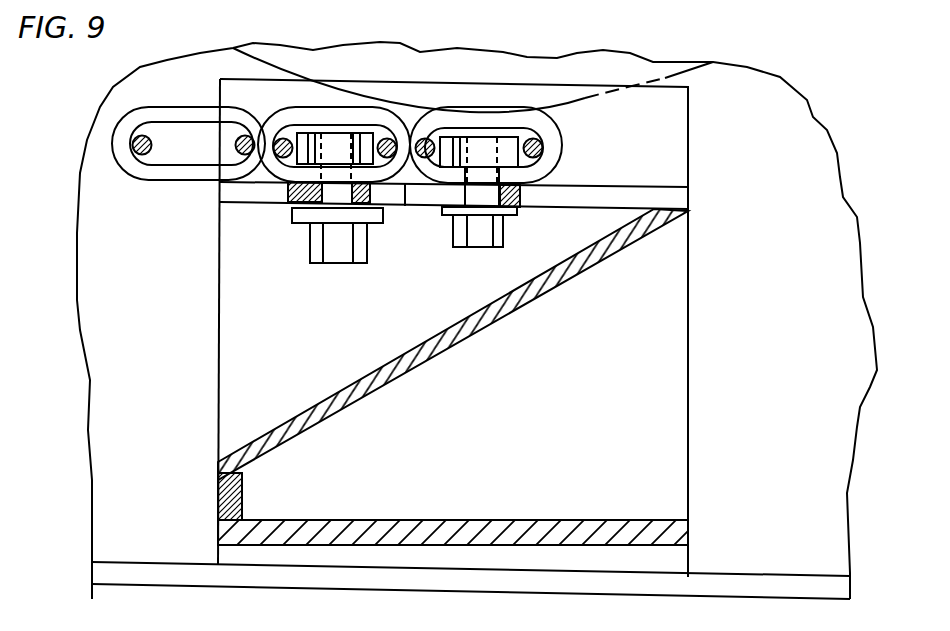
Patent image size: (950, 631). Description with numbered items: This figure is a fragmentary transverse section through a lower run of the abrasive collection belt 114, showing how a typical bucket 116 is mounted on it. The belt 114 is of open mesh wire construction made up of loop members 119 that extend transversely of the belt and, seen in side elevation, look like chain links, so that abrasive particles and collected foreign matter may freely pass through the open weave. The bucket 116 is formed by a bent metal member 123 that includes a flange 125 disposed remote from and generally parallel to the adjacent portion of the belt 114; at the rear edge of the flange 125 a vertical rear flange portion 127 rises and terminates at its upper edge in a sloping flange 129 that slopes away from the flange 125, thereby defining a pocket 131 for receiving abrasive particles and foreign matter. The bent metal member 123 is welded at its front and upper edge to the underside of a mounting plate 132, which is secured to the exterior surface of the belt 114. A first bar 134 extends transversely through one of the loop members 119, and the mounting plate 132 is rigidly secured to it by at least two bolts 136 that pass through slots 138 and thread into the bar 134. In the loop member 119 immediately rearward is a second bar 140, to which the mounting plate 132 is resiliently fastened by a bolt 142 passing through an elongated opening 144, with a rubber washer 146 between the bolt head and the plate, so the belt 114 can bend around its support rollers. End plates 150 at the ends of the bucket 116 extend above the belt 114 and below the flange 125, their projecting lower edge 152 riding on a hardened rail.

The belt 114 is at (168, 106).
The loop member 119 is at (200, 181).
The first bar 134 is at (488, 135).
The second bar 140 is at (290, 192).
The rubber washer 146 is at (297, 209).
The bolt 142 is at (330, 258).
The sloping flange 129 is at (357, 377).
The elongated opening 144 is at (383, 207).
The slot 138 is at (440, 212).
The bolt 136 is at (483, 238).
The mounting plate 132 is at (558, 200).
The pocket 131 is at (541, 391).
The end plate 150 is at (219, 367).
The bucket 116 is at (218, 437).
The vertical rear flange portion 127 is at (245, 500).
The bent metal member 123 is at (364, 490).
The projecting lower edge 152 is at (433, 557).
The flange 125 is at (510, 527).